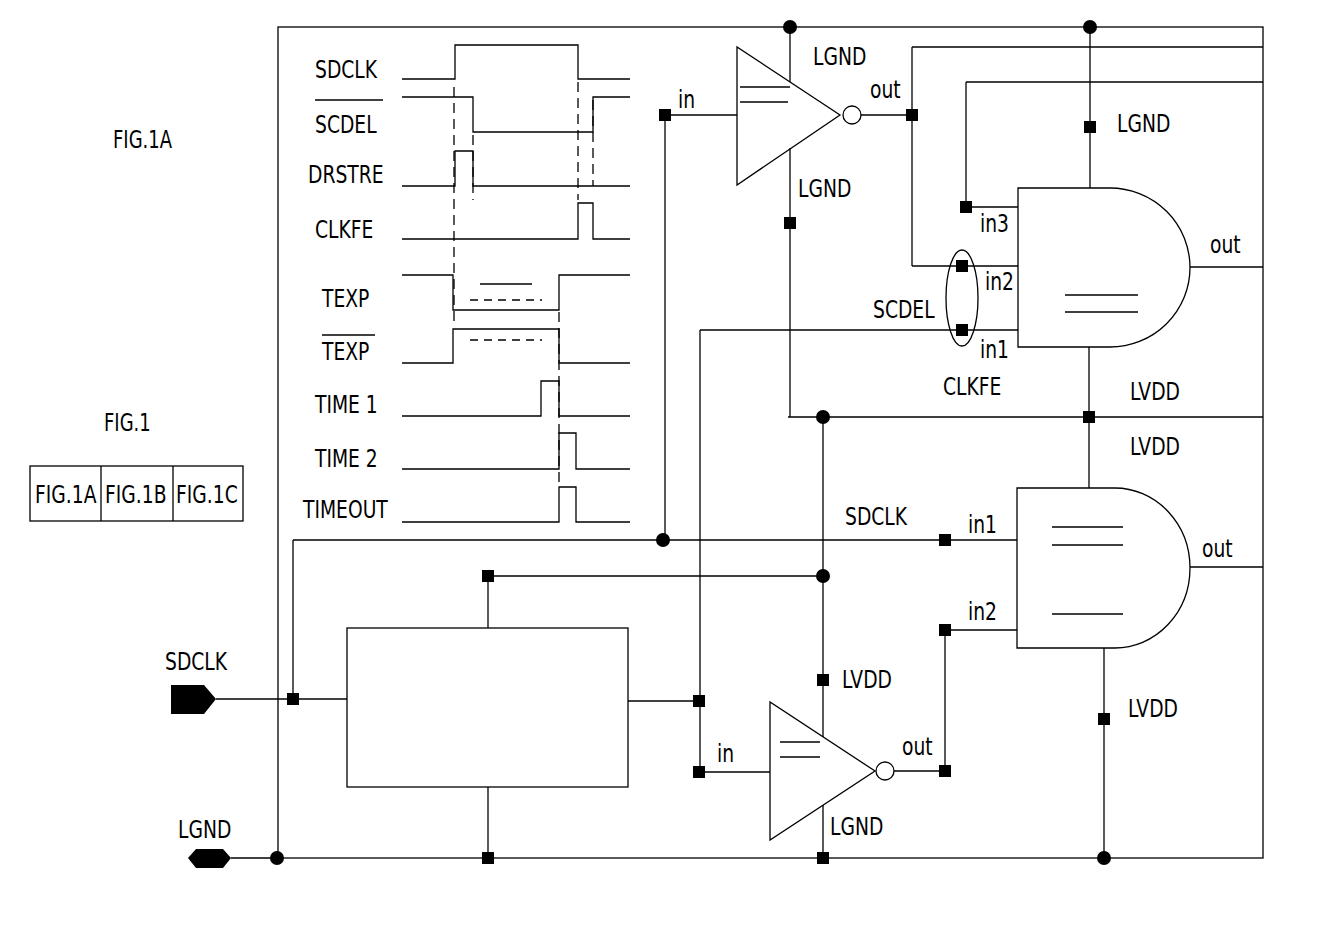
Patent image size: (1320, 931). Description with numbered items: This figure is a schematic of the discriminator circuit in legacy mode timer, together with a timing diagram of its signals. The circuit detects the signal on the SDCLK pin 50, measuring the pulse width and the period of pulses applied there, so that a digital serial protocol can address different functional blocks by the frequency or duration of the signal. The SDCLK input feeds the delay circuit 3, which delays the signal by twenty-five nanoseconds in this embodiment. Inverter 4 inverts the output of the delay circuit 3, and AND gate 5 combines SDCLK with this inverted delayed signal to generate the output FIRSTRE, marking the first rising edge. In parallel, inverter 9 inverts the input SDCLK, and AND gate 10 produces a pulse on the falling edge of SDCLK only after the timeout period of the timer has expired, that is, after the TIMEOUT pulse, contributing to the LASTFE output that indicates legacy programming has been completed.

The delay circuit DELI 3 is at (390, 627).
The inverter 4 is at (840, 745).
The AND gate 5 is at (1165, 612).
The inverter 9 is at (737, 150).
The AND gate 10 is at (1178, 208).
The SDCLK pin 50 is at (241, 632).